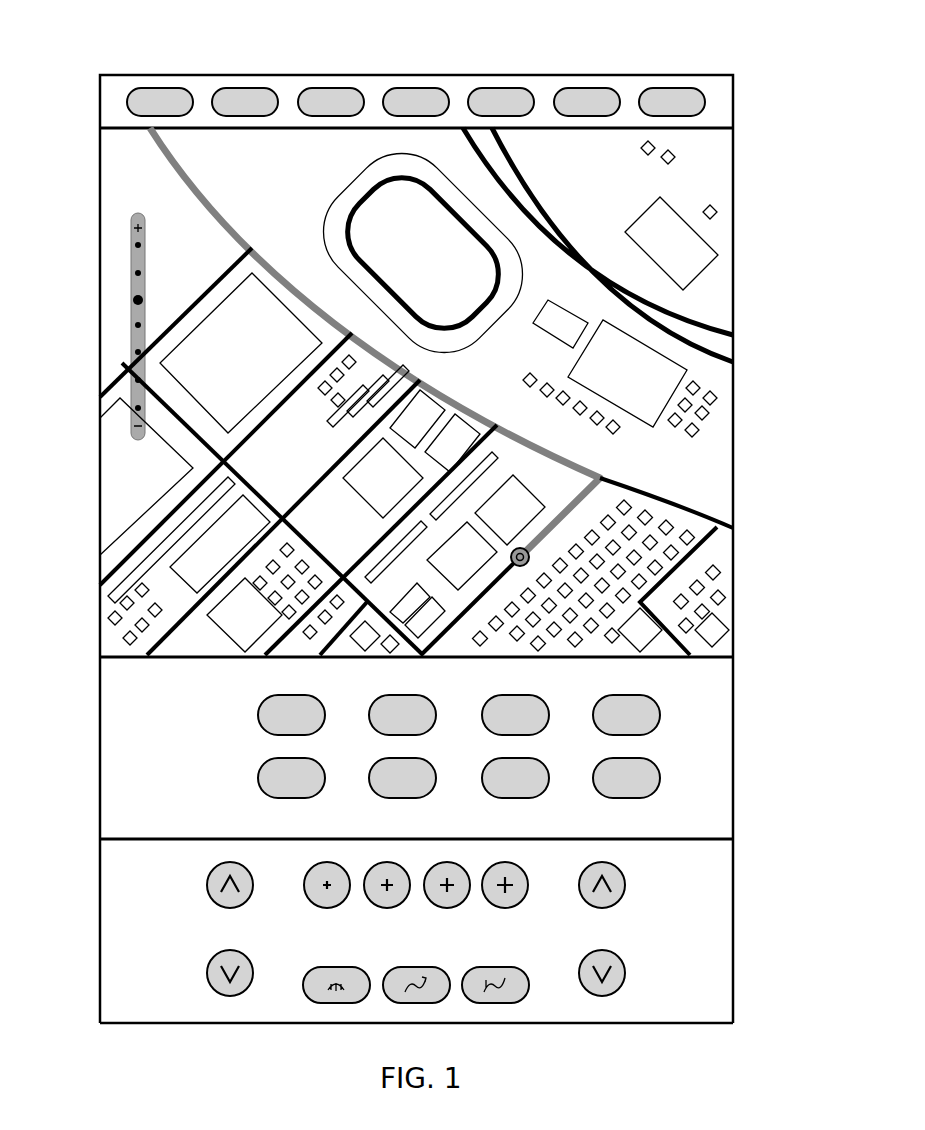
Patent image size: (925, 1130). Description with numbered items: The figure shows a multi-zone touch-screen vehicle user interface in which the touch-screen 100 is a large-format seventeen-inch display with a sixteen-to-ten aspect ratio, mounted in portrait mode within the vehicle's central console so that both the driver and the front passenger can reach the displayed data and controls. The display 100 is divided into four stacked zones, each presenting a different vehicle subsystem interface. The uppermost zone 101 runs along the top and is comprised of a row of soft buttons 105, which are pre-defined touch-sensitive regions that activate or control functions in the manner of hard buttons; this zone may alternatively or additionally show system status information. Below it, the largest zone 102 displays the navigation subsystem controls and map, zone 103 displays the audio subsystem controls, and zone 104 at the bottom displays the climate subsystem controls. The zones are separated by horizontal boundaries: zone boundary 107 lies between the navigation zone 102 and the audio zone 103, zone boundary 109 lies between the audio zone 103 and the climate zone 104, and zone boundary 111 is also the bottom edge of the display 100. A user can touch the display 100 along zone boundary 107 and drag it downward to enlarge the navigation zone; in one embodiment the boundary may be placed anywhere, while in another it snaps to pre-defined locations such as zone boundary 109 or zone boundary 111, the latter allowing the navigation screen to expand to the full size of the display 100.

The touch-screen 100 is at (705, 51).
The uppermost zone 101 is at (100, 100).
The navigation zone 102 is at (100, 352).
The audio zone 103 is at (100, 748).
The climate zone 104 is at (100, 935).
The soft buttons 105 is at (416, 102).
The zone boundary 107 is at (627, 659).
The zone boundary 109 is at (612, 834).
The zone boundary 111 is at (612, 1021).